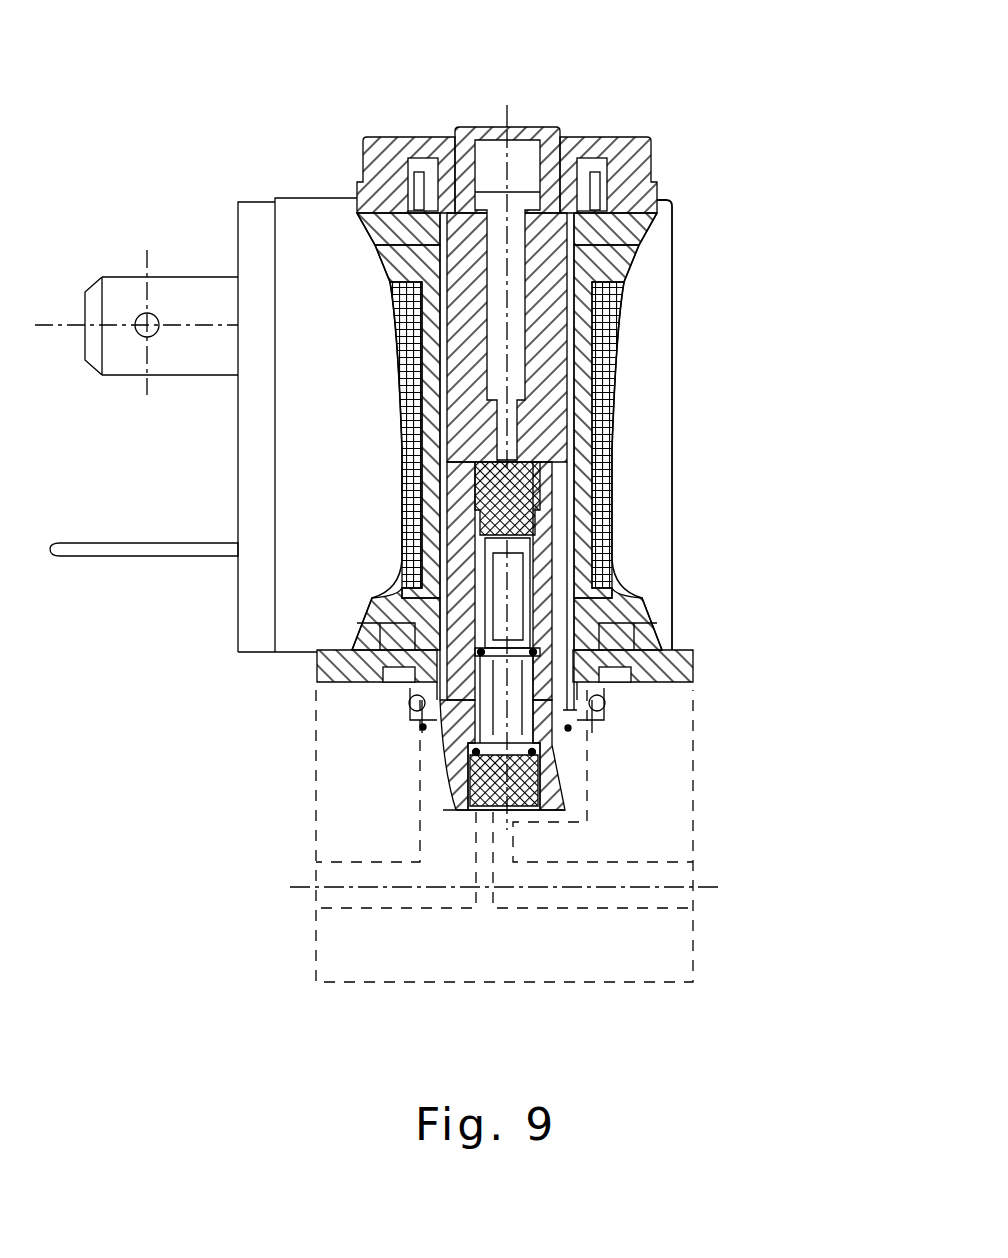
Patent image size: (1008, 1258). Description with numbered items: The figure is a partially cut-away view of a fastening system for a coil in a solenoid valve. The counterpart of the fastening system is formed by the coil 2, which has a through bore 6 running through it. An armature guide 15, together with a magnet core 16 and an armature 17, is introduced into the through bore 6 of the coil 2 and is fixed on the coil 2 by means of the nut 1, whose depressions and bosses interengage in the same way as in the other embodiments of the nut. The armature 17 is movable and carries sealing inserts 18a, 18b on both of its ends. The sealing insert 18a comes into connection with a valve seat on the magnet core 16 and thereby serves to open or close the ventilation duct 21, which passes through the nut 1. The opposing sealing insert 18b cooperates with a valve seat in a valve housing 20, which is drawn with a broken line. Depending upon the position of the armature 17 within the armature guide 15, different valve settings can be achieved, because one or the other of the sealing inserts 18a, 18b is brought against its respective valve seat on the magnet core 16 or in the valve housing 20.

The nut 1 is at (625, 137).
The coil 2 is at (652, 257).
The through bore 6 is at (473, 193).
The armature guide 15 is at (423, 727).
The magnet core 16 is at (550, 399).
The armature 17 is at (540, 562).
The sealing insert 18a is at (532, 490).
The sealing insert 18b is at (548, 778).
The valve housing 20 is at (615, 948).
The ventilation duct 21 is at (510, 323).